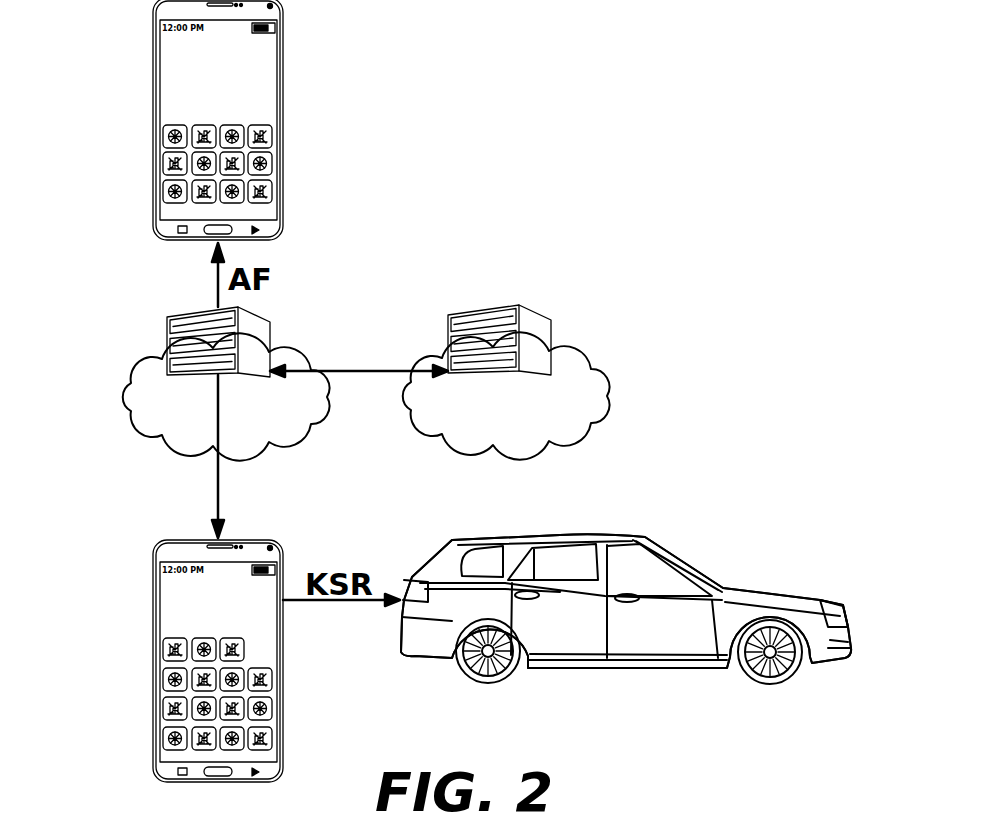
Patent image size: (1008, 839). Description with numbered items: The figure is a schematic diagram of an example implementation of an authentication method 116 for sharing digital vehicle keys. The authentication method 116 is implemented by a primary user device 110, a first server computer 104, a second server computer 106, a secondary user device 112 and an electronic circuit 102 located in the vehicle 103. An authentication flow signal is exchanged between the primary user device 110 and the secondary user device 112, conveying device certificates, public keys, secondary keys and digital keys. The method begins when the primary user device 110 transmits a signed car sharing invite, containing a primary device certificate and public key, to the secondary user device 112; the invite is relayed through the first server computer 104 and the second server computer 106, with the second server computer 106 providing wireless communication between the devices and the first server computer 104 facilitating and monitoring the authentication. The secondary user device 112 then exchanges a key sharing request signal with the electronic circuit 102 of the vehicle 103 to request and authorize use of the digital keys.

The electronic circuit 102 is at (562, 532).
The vehicle 103 is at (562, 532).
The first server computer 104 is at (612, 385).
The second server computer 106 is at (125, 383).
The primary user device 110 is at (153, 75).
The secondary user device 112 is at (148, 608).
The authentication method 116 is at (575, 152).